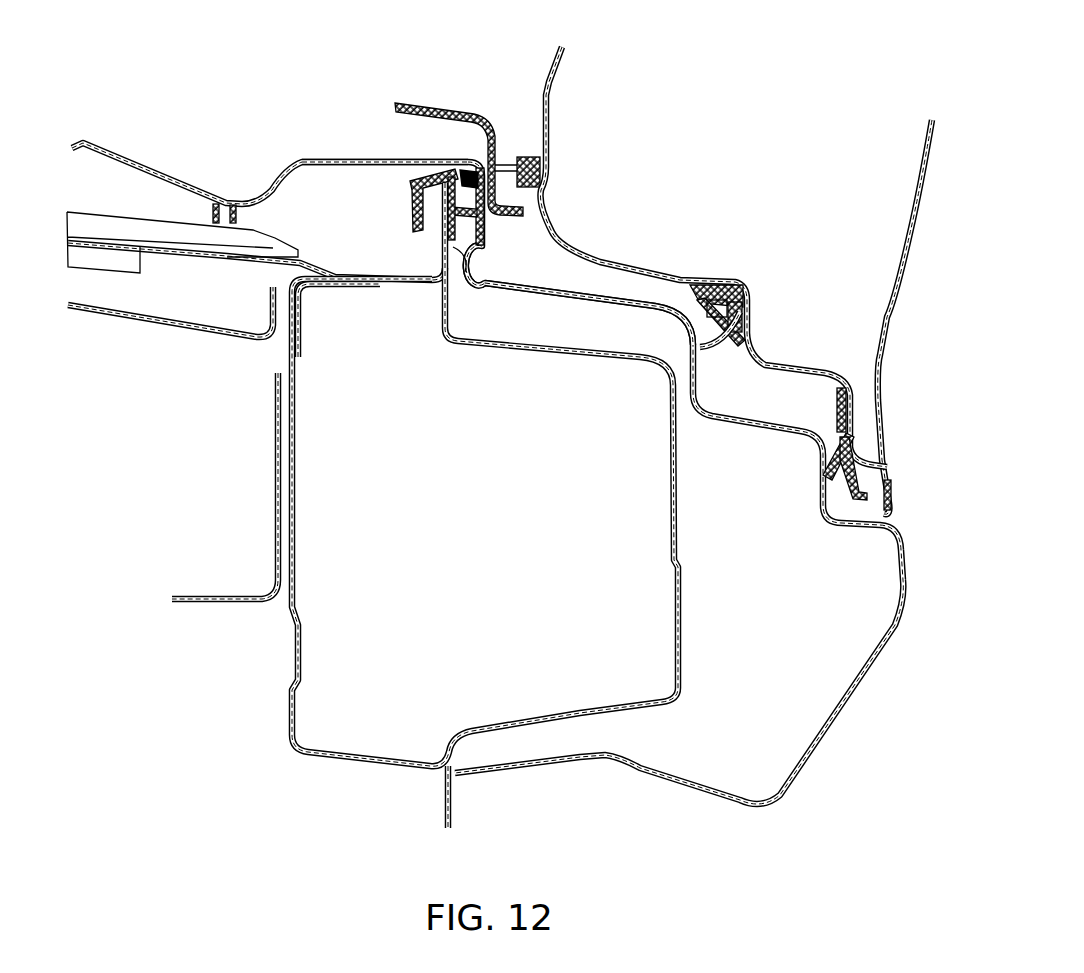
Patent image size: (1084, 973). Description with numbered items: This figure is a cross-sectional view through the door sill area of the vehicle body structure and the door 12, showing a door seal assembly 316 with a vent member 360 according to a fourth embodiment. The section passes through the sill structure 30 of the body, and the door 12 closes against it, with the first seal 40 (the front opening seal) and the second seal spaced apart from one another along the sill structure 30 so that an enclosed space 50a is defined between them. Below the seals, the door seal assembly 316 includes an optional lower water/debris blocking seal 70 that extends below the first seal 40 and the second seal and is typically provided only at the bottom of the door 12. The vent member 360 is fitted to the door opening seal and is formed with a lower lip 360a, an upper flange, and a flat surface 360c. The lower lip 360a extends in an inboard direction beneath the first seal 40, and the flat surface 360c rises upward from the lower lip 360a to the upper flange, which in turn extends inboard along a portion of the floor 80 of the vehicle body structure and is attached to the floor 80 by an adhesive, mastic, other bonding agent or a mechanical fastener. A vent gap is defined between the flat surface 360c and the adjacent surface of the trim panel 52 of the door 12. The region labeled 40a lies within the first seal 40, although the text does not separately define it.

The door seal assembly 316 is at (712, 82).
The vent member 360 is at (330, 152).
The flat surface 360c is at (370, 158).
The lower lip 360a is at (479, 284).
The trim panel 52 is at (423, 107).
The clip engaging portion 40a is at (462, 180).
The first seal 40 is at (466, 258).
The sill structure 30 is at (567, 297).
The enclosed space 50a is at (602, 287).
The door 12 is at (655, 276).
The lower water/debris blocking seal 70 is at (845, 490).
The floor 80 is at (168, 252).